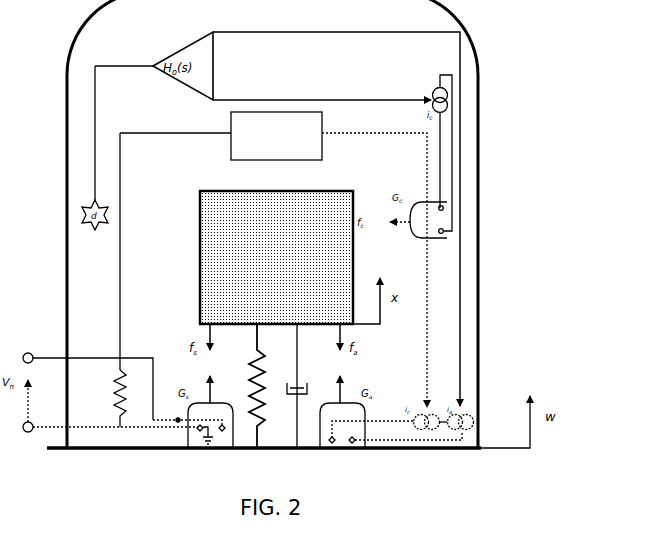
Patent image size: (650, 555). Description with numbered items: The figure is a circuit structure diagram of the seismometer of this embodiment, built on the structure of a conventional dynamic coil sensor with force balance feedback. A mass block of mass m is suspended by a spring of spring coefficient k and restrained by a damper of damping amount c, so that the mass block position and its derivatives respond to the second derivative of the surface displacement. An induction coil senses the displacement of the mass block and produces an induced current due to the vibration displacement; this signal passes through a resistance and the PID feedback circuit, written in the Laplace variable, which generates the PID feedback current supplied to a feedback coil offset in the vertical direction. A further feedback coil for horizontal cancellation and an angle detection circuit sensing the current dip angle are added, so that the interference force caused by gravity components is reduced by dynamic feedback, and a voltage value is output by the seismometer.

The mass of the mass block m is at (276, 257).
The spring coefficient k is at (250, 386).
The damping amount of the damper c is at (296, 386).